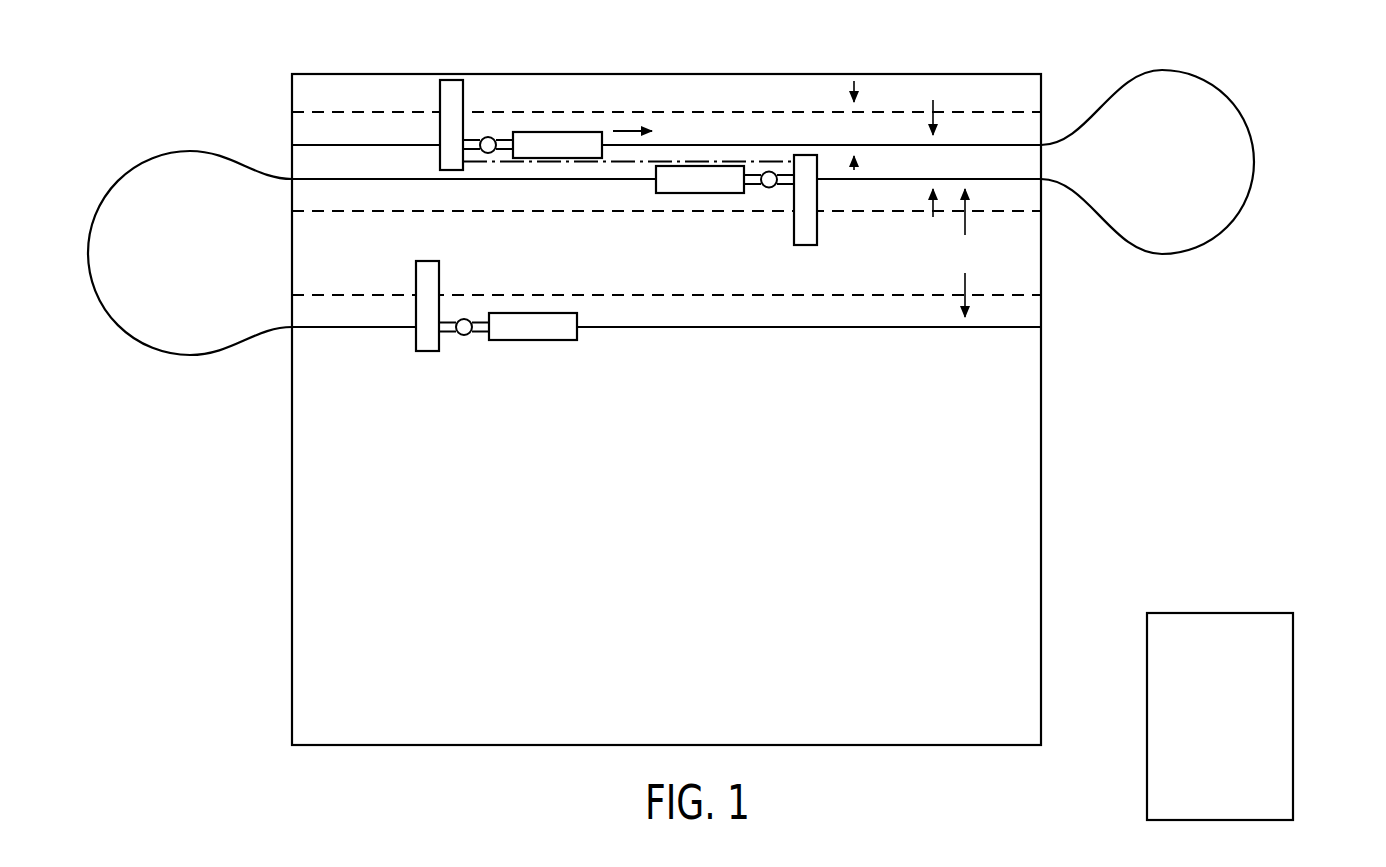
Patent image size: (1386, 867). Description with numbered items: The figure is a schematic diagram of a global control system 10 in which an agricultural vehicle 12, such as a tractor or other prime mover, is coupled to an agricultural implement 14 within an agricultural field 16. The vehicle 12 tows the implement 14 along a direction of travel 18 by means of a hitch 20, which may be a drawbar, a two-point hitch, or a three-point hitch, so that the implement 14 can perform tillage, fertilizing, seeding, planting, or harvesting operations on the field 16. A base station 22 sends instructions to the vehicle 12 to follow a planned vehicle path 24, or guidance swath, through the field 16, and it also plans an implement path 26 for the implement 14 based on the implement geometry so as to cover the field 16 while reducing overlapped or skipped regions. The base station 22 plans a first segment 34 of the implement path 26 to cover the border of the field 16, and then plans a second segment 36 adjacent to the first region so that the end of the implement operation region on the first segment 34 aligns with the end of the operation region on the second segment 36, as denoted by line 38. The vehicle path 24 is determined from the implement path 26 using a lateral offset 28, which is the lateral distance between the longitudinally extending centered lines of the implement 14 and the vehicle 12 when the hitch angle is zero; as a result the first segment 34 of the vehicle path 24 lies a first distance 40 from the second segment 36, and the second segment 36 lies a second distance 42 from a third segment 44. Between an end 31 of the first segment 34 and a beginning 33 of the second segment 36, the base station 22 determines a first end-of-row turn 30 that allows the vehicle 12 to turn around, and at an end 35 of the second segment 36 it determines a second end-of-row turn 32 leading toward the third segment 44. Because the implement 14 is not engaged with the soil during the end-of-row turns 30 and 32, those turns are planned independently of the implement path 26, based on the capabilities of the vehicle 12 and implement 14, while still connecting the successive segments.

The global control system 10 is at (1098, 38).
The agricultural vehicle 12 is at (559, 132).
The agricultural implement 14 is at (438, 92).
The agricultural field 16 is at (1042, 453).
The direction of travel 18 is at (633, 128).
The hitch 20 is at (488, 137).
The base station 22 is at (1293, 713).
The vehicle path 24 is at (893, 145).
The implement path 26 is at (755, 113).
The lateral offset 28 is at (854, 93).
The first end-of-row turn 30 is at (1254, 157).
The end of the first segment 31 is at (1062, 112).
The second end-of-row turn 32 is at (133, 167).
The beginning of the second segment 33 is at (1062, 203).
The first segment 34 is at (400, 94).
The end of the second segment 35 is at (275, 197).
The second segment 36 is at (836, 232).
The line 38 is at (627, 162).
The first distance 40 is at (933, 100).
The second distance 42 is at (965, 253).
The third segment 44 is at (402, 334).